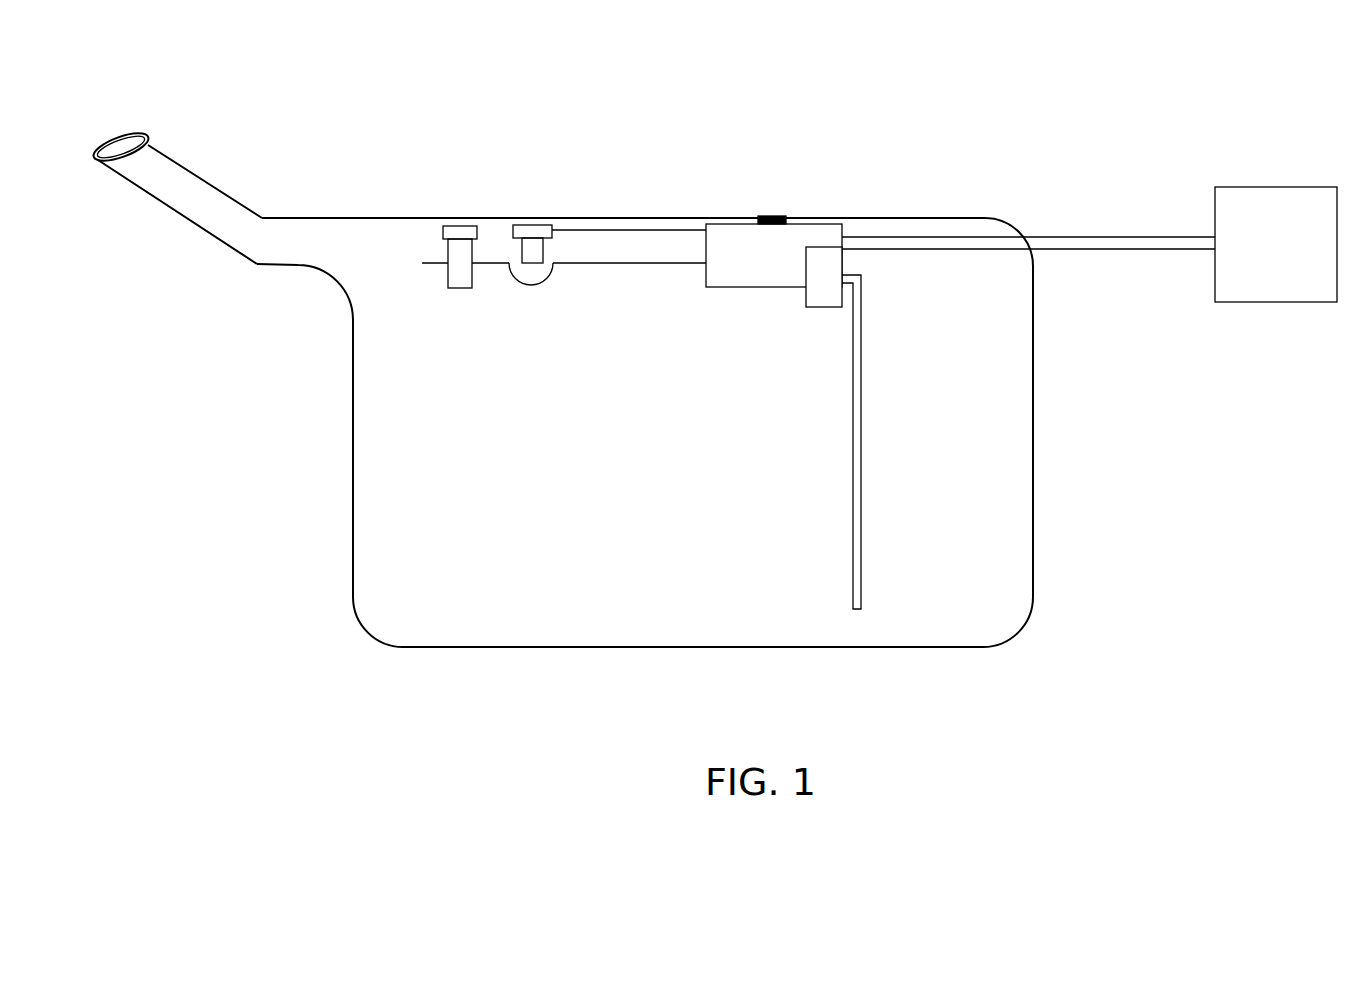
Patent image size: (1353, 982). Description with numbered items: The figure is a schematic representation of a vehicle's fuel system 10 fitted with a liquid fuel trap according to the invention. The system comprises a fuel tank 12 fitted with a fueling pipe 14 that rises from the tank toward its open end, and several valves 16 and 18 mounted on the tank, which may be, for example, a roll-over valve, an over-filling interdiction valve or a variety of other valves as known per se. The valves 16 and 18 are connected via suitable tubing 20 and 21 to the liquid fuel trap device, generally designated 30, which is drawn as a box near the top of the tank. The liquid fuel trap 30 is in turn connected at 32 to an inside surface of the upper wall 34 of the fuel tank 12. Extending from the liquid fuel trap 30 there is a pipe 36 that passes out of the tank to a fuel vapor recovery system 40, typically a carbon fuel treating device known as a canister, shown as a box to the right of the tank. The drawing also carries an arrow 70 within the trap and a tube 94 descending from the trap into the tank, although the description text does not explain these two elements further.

The fuel system 10 is at (838, 180).
The fuel tank 12 is at (1034, 427).
The fueling pipe 14 is at (197, 176).
The valve 16 is at (422, 263).
The valve 18 is at (525, 230).
The tubing 20 is at (630, 263).
The tubing 21 is at (627, 230).
The liquid fuel trap device 30 is at (777, 293).
The connection 32 is at (770, 215).
The upper wall 34 is at (932, 217).
The pipe 36 is at (885, 244).
The fuel vapor recovery system 40 is at (1278, 187).
The flow path 70 is at (791, 253).
The tube 94 is at (861, 494).